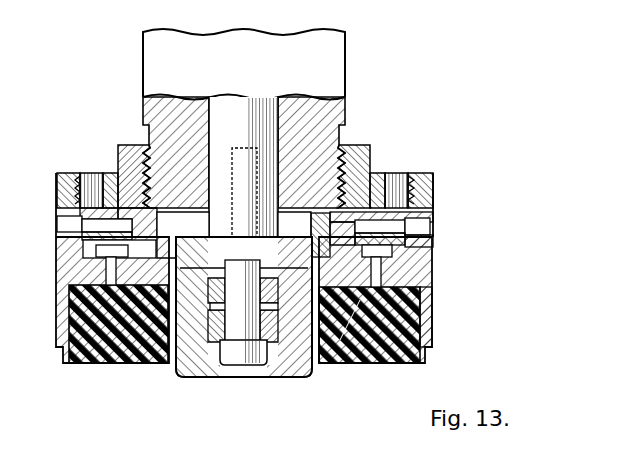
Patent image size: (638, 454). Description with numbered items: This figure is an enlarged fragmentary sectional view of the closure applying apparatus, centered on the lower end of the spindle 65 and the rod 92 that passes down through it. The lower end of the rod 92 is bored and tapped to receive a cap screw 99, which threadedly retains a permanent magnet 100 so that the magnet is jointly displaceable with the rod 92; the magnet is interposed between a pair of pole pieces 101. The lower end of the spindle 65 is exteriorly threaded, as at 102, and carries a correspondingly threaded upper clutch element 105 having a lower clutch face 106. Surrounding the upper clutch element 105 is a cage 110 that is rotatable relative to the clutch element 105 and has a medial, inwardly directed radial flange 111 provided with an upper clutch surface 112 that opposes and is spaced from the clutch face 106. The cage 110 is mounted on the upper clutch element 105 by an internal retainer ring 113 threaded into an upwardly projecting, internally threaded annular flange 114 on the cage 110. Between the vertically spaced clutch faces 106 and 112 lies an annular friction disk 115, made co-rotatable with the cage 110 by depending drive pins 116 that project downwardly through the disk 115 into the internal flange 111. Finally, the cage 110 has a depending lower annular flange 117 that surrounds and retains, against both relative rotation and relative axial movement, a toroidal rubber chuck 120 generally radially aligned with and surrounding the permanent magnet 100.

The spindle 65 is at (264, 61).
The rod 92 is at (245, 131).
The exterior threads 102 is at (160, 160).
The upper clutch element 105 is at (133, 167).
The internal retainer ring 113 is at (77, 182).
The internally threaded annular flange 114 is at (62, 198).
The lower clutch face 106 is at (150, 242).
The upper clutch surface 112 is at (140, 238).
The pole pieces 101 is at (190, 253).
The annular friction disk 115 is at (340, 250).
The drive pins 116 is at (382, 272).
The cage 110 is at (411, 272).
The lower annular flange 117 is at (427, 318).
The cap screw 99 is at (237, 352).
The permanent magnet 100 is at (295, 350).
The radial flange 111 is at (350, 318).
The toroidal rubber chuck 120 is at (378, 342).